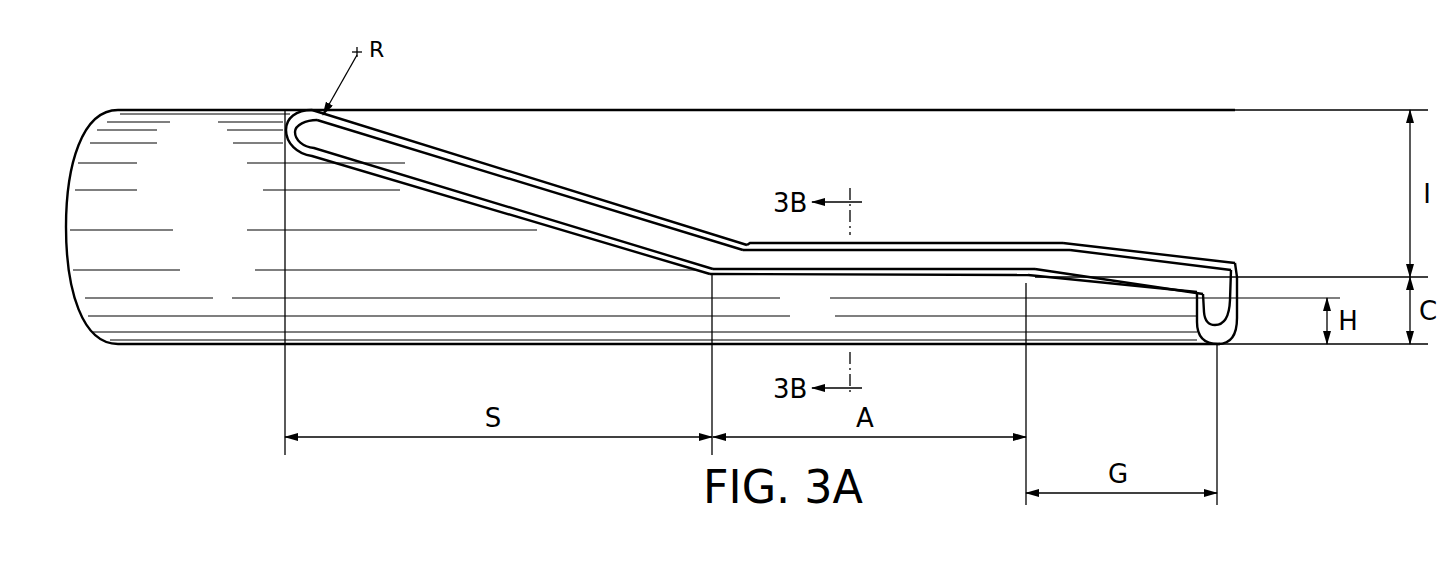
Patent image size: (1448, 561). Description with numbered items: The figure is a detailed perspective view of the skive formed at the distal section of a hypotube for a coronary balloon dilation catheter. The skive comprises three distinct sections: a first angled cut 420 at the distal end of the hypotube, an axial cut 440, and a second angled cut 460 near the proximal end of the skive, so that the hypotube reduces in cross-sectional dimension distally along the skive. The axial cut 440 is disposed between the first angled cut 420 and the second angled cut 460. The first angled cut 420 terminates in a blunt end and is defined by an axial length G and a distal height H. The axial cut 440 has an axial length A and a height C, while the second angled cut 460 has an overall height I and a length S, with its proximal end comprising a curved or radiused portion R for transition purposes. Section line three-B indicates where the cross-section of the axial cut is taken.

The second angled cut 460 is at (472, 160).
The axial cut 440 is at (973, 243).
The first angled cut 420 is at (1188, 257).